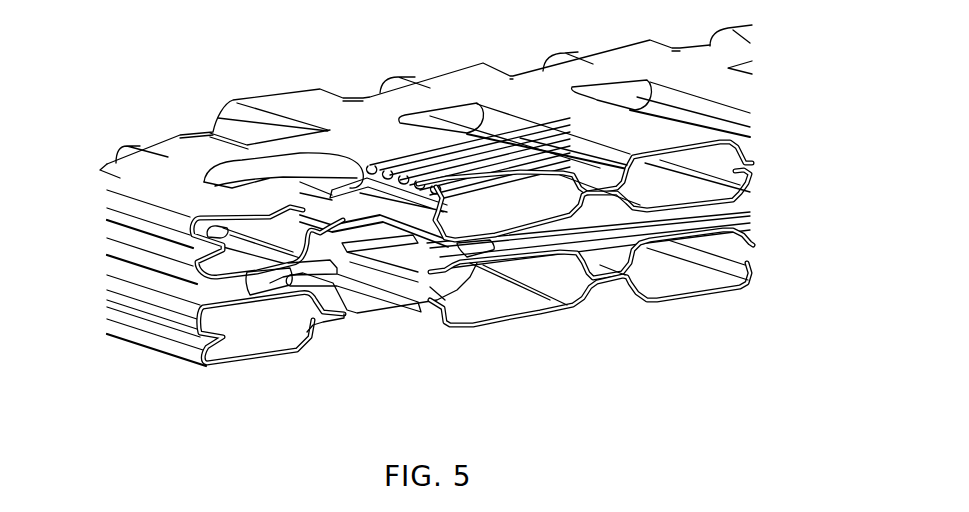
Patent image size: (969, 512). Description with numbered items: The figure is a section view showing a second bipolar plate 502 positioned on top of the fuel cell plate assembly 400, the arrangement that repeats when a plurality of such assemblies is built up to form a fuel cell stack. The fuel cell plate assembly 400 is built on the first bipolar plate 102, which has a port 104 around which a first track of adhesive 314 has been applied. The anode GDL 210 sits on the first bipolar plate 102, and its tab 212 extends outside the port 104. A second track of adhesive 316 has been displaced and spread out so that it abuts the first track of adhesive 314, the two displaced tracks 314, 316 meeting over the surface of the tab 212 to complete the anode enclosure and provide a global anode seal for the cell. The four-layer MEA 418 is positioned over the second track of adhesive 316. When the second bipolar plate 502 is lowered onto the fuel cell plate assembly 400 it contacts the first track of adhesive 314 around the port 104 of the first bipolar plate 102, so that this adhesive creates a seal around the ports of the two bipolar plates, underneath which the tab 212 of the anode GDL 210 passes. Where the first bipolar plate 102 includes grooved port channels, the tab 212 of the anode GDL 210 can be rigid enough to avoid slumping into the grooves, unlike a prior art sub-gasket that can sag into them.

The second bipolar plate 502 is at (122, 177).
The fuel cell plate assembly 400 is at (100, 345).
The first bipolar plate 102 is at (167, 338).
The first track of adhesive 314 is at (278, 292).
The port 104 is at (362, 314).
The tab 212 is at (432, 253).
The second track of adhesive 316 is at (547, 290).
The 4-layer MEA 418 is at (745, 197).
The anode GDL 210 is at (745, 258).